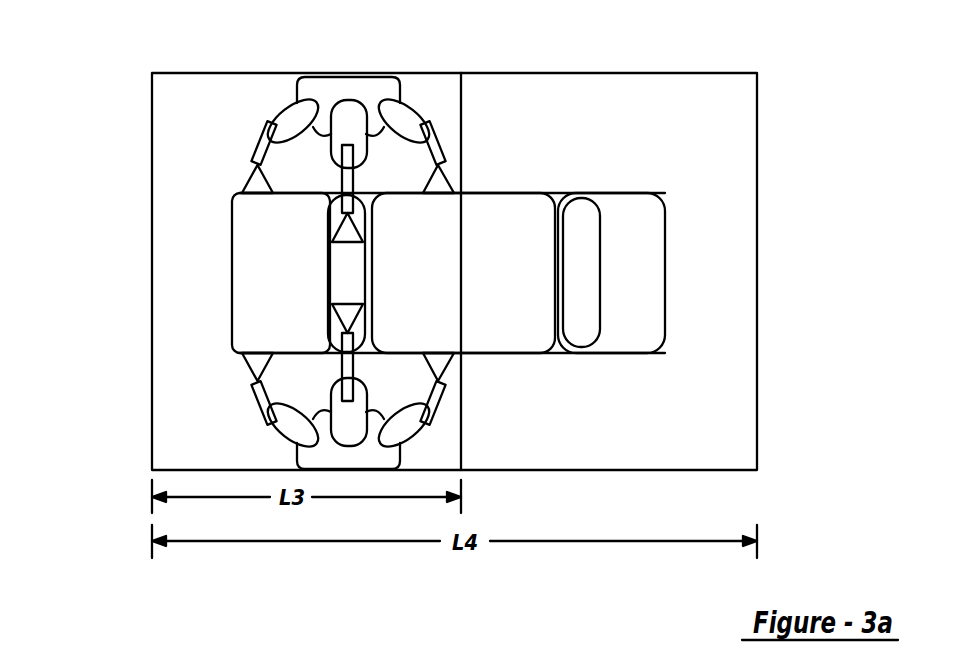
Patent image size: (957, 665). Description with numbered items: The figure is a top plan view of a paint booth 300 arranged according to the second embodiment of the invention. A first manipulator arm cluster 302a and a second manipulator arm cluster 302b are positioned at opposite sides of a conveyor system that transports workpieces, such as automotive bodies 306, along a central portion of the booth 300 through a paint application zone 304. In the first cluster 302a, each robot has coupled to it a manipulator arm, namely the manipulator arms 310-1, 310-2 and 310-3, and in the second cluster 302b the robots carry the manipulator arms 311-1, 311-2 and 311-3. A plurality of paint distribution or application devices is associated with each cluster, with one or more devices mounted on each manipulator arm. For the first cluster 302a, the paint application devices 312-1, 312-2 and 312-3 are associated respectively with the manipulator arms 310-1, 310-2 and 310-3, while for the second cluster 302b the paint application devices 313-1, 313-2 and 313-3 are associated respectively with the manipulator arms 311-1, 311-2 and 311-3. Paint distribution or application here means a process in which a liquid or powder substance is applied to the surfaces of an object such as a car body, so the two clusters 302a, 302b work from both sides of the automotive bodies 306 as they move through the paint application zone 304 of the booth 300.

The booth 300 is at (197, 73).
The first manipulator arm cluster 302a is at (285, 100).
The second manipulator arm cluster 302b is at (422, 447).
The paint application zone 304 is at (187, 151).
The automotive bodies 306 is at (497, 192).
The manipulator arm 310-1 is at (342, 180).
The manipulator arm 310-2 is at (253, 158).
The manipulator arm 310-3 is at (432, 142).
The manipulator arm 311-1 is at (348, 367).
The manipulator arm 311-2 is at (265, 412).
The manipulator arm 311-3 is at (432, 410).
The paint distribution or application device 312-1 is at (352, 230).
The paint distribution or application device 312-2 is at (260, 196).
The paint distribution or application device 312-3 is at (450, 180).
The paint distribution or application device 313-1 is at (348, 317).
The paint distribution or application device 313-2 is at (262, 350).
The paint distribution or application device 313-3 is at (430, 350).